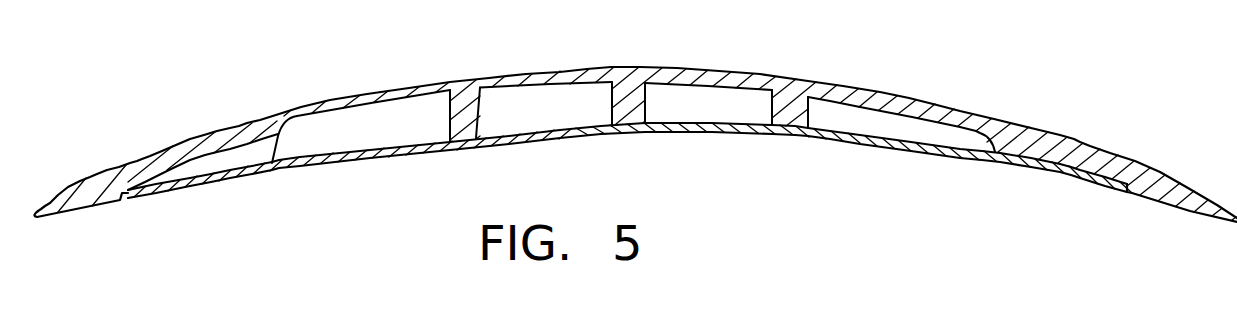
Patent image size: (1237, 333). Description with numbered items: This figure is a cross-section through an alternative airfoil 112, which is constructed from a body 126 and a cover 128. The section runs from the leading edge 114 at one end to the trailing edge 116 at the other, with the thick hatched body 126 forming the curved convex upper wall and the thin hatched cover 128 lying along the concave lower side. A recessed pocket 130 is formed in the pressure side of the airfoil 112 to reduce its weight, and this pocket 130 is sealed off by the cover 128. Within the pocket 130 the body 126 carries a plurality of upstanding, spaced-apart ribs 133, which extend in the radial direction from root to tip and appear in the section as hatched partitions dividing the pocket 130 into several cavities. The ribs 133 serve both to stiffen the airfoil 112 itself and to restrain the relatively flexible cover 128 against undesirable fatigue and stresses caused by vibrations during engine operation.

The airfoil 112 is at (897, 52).
The leading edge 114 is at (37, 217).
The trailing edge 116 is at (1236, 242).
The body 126 is at (1020, 135).
The cover 128 is at (864, 145).
The recessed pocket 130 is at (398, 136).
The ribs 133 is at (630, 111).